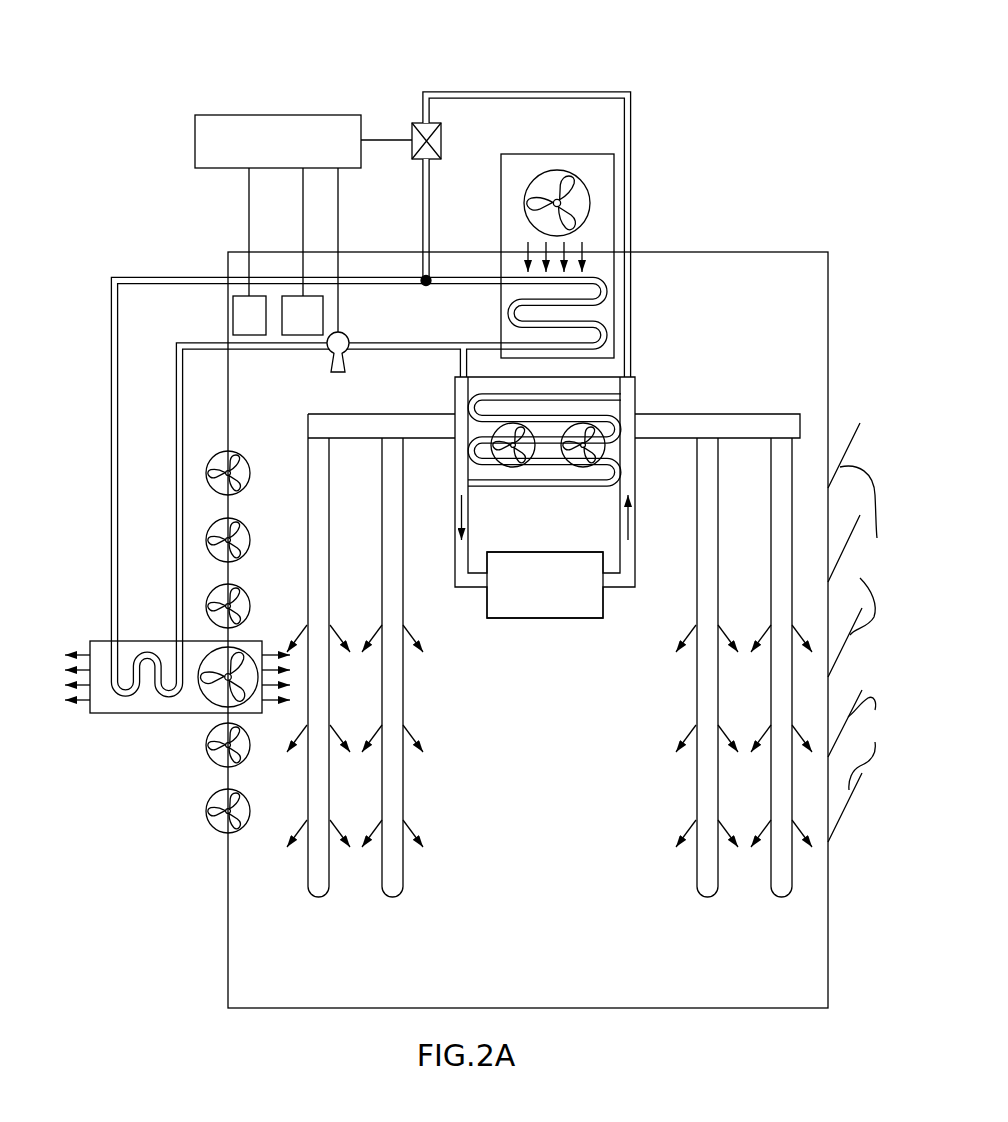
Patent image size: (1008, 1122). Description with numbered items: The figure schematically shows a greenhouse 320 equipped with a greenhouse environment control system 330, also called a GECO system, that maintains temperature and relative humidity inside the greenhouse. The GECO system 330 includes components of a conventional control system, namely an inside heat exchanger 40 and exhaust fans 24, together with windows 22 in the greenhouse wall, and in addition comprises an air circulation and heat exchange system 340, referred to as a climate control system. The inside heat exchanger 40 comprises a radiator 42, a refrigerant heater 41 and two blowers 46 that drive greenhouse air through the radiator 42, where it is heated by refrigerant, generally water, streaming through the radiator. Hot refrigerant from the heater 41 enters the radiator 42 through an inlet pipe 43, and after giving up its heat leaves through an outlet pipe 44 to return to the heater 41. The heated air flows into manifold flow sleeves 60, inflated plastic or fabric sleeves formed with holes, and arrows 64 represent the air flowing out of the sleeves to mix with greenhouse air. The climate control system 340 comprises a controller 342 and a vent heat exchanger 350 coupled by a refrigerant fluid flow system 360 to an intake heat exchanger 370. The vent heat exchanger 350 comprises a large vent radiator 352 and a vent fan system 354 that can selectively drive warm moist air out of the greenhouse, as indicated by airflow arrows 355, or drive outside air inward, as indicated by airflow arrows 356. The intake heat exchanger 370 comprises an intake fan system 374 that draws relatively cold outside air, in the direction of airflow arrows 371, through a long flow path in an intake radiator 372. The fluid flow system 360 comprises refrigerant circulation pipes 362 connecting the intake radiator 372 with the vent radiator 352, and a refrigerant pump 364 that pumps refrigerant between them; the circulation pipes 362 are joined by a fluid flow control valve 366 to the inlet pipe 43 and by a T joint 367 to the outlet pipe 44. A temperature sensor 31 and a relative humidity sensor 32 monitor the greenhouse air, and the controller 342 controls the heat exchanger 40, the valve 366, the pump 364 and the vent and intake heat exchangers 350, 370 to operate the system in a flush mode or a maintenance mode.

The greenhouse environment control system 330 is at (288, 58).
The controller 342 is at (263, 113).
The air circulation and heat exchange system 340 is at (183, 243).
The temperature sensor 31 is at (240, 296).
The relative humidity sensor 32 is at (297, 296).
The refrigerant fluid flow system 360 is at (157, 322).
The refrigerant circulation pipes 362 is at (177, 503).
The refrigerant pump 364 is at (347, 333).
The T joint 367 is at (483, 342).
The fluid flow control valve 366 is at (442, 142).
The intake fan system 374 is at (593, 205).
The intake heat exchanger 370 is at (615, 232).
The airflow arrows 371 is at (583, 245).
The intake radiator 372 is at (600, 307).
The inside heat exchanger 40 is at (637, 400).
The outlet pipe 44 is at (455, 508).
The inlet pipe 43 is at (637, 523).
The radiator 42 is at (488, 485).
The blowers 46 is at (535, 450).
The refrigerant heater 41 is at (531, 599).
The manifold flow sleeves 60 is at (382, 528).
The arrows 64 is at (362, 640).
The windows 22 is at (835, 565).
The greenhouse 320 is at (532, 796).
The airflow arrows 355 is at (90, 650).
The airflow arrows 356 is at (265, 647).
The vent radiator 352 is at (150, 682).
The vent fan system 354 is at (208, 700).
The exhaust fans 24 is at (250, 810).
The vent heat exchanger 350 is at (181, 710).